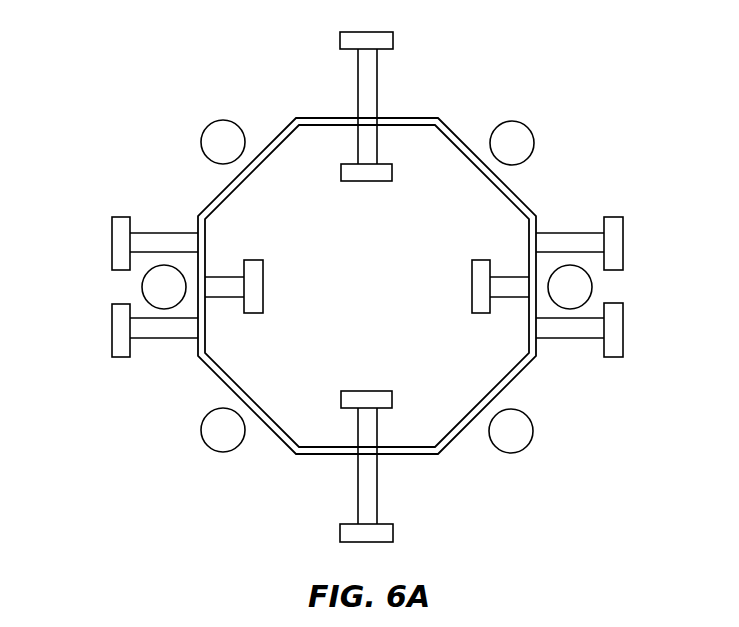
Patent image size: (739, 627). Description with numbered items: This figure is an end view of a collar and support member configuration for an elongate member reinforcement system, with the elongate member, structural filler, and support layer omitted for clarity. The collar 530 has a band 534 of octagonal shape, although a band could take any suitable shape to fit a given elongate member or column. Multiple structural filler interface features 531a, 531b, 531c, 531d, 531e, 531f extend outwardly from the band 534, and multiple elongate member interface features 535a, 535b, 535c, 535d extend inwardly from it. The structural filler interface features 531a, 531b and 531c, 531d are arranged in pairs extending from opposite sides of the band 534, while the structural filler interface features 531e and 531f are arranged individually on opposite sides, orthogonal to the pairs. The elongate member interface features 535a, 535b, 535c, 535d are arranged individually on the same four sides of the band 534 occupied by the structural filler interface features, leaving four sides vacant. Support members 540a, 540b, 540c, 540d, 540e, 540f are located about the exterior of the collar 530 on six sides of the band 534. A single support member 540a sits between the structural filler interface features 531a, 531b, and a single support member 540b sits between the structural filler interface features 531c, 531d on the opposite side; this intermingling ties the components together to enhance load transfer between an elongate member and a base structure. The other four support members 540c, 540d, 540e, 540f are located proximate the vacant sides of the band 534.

The collar 530 is at (283, 42).
The band 534 is at (447, 118).
The structural filler interface feature 531a is at (110, 244).
The structural filler interface feature 531b is at (110, 328).
The structural filler interface feature 531c is at (624, 242).
The structural filler interface feature 531d is at (624, 328).
The structural filler interface feature 531e is at (394, 40).
The structural filler interface feature 531f is at (394, 530).
The elongate member interface feature 535a is at (265, 287).
The elongate member interface feature 535b is at (469, 286).
The elongate member interface feature 535c is at (369, 182).
The elongate member interface feature 535d is at (370, 391).
The support member 540a is at (140, 290).
The support member 540b is at (592, 285).
The support member 540c is at (201, 138).
The support member 540d is at (533, 430).
The support member 540e is at (201, 430).
The support member 540f is at (534, 141).